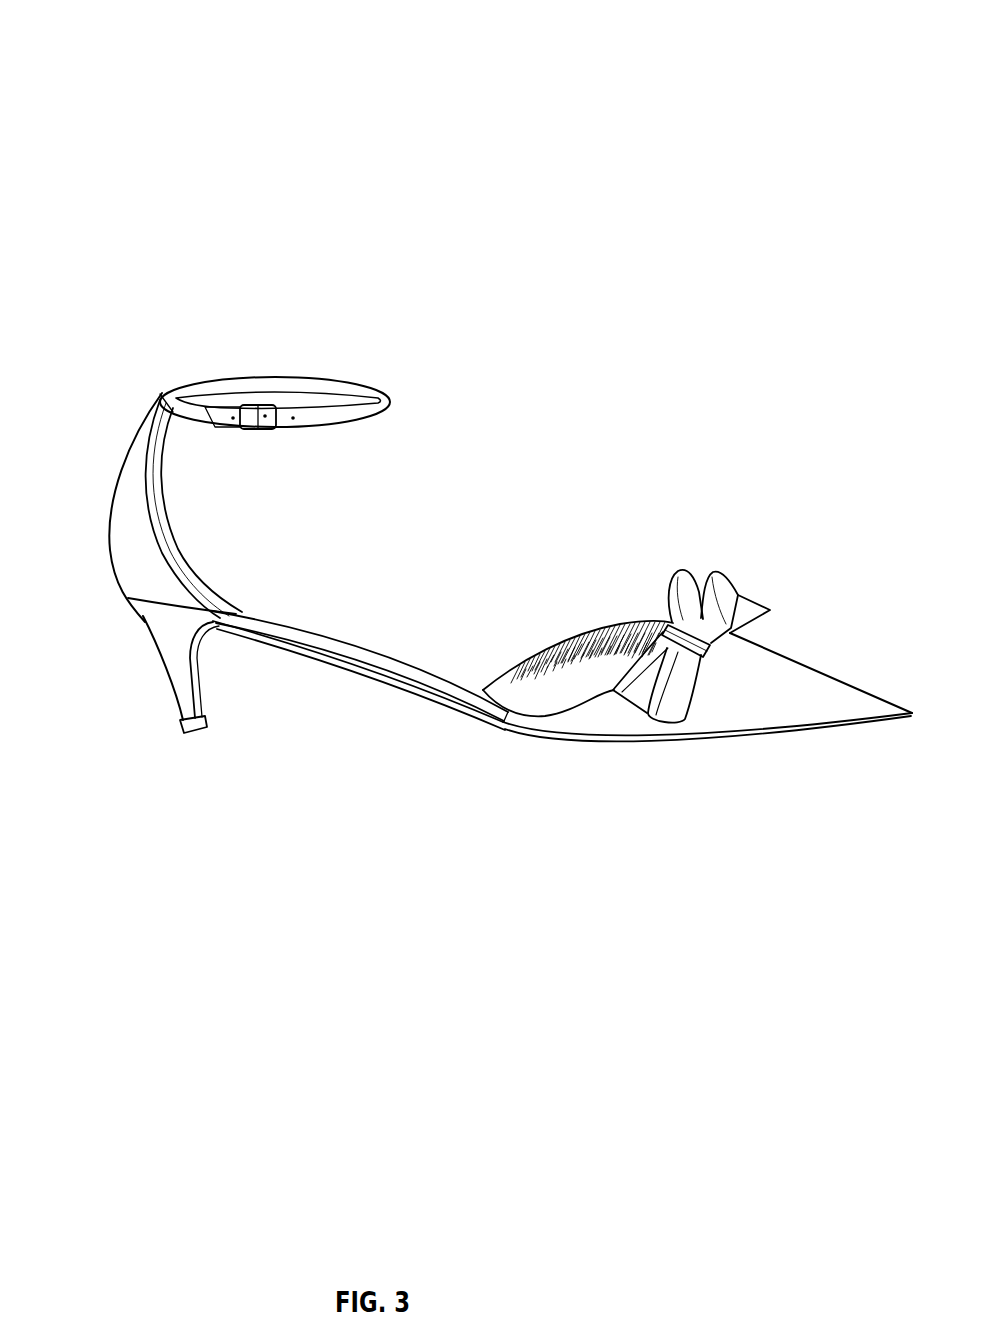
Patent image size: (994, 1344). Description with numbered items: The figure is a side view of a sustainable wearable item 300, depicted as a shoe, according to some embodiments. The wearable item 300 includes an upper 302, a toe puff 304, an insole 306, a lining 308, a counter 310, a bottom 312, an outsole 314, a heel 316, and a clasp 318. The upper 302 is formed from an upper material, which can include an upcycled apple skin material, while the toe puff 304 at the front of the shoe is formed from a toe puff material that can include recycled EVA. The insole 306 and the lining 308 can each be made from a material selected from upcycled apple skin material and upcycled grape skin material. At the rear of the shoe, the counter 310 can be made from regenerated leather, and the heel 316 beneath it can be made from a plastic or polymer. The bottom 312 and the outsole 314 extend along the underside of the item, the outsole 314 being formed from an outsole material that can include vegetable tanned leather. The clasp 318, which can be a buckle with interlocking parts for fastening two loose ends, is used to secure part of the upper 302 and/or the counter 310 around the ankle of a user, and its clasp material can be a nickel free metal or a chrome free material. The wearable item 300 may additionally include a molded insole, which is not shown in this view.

The sustainable wearable item 300 is at (862, 88).
The upper 302 is at (710, 548).
The toe puff 304 is at (862, 662).
The insole 306 is at (363, 647).
The lining 308 is at (332, 378).
The counter 310 is at (106, 522).
The bottom 312 is at (364, 724).
The outsole 314 is at (298, 657).
The heel 316 is at (161, 684).
The clasp 318 is at (265, 432).